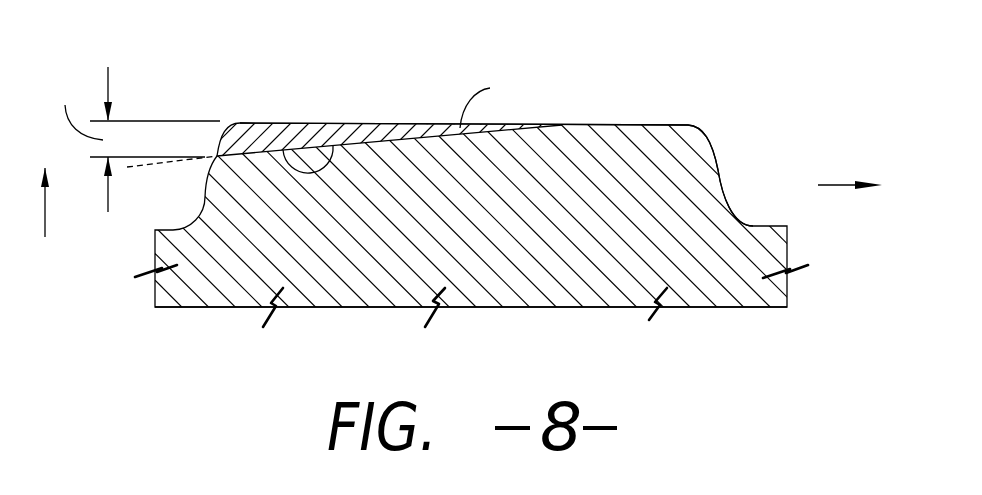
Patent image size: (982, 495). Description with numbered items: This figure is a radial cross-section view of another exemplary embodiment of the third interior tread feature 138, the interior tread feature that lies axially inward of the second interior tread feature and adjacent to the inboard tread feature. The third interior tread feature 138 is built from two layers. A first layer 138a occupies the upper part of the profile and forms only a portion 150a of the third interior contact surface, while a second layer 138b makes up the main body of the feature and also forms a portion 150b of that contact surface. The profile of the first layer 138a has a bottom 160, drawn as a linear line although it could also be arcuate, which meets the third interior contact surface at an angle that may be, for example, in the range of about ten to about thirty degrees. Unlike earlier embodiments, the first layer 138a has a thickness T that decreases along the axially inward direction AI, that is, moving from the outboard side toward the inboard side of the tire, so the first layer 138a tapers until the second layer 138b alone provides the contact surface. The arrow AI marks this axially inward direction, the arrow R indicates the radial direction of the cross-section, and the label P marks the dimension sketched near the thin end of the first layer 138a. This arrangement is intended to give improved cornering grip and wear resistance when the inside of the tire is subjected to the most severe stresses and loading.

The third interior tread feature 138 is at (222, 193).
The first layer 138a is at (258, 140).
The second layer 138b is at (225, 280).
The bottom 160 is at (282, 150).
The portion of the third interior contact surface 150a is at (368, 122).
The portion of the third interior contact surface 150b is at (636, 124).
The thickness T is at (138, 139).
The pitch P is at (172, 180).
The radial direction R is at (48, 224).
The axially inward direction AI is at (832, 186).